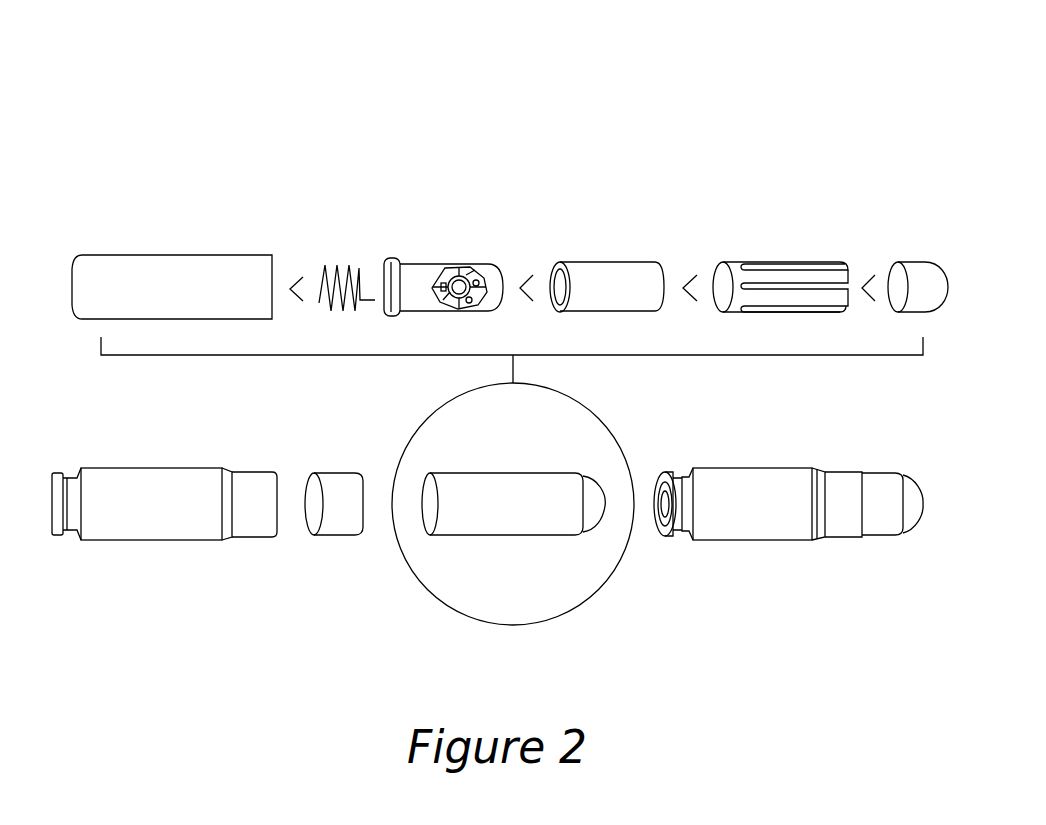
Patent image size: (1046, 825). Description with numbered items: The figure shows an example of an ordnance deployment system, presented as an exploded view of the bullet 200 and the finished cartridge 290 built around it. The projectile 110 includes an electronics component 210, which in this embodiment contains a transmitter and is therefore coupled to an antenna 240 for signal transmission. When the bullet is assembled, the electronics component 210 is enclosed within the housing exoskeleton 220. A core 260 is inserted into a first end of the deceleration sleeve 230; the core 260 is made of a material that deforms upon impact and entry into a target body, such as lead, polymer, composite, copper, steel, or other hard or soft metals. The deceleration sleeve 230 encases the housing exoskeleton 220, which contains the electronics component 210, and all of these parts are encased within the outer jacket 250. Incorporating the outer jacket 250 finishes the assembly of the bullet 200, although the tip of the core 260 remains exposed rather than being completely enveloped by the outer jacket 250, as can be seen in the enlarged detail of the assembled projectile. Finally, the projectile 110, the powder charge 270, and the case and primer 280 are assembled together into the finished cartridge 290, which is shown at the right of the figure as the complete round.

The bullet 200 is at (232, 123).
The projectile 110 is at (512, 473).
The electronics component 210 is at (465, 263).
The housing exoskeleton 220 is at (598, 263).
The deceleration sleeve 230 is at (758, 262).
The antenna 240 is at (350, 263).
The outer jacket 250 is at (195, 255).
The core 260 is at (910, 262).
The powder charge 270 is at (342, 473).
The case and primer 280 is at (185, 468).
The finished cartridge 290 is at (758, 468).